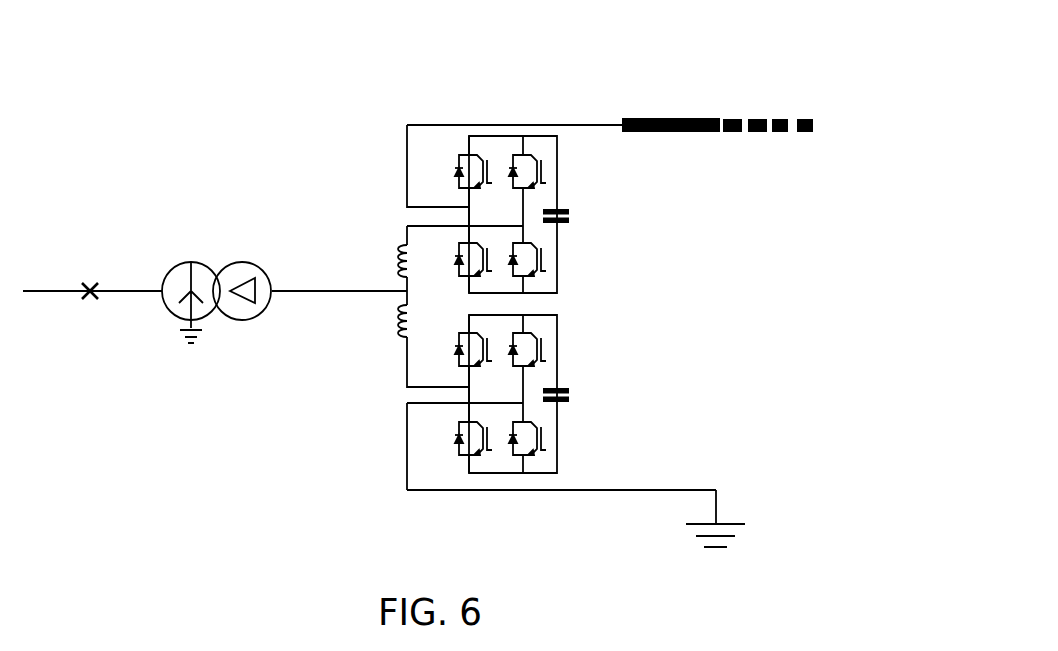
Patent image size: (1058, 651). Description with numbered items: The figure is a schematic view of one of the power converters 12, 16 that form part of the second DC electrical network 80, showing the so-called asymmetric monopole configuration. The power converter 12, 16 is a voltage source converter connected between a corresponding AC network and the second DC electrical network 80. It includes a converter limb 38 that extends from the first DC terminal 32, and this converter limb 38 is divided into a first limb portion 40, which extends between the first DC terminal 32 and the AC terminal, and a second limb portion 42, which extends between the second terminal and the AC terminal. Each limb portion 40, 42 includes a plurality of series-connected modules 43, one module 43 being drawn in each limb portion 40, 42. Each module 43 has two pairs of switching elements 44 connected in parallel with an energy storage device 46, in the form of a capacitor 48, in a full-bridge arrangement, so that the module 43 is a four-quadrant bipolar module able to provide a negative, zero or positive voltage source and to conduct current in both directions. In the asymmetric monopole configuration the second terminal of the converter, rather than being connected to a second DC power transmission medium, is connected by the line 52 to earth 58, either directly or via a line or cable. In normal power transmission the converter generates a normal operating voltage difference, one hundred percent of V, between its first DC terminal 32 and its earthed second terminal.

The first power converter 12 is at (215, 174).
The third power converter 16 is at (212, 48).
The converter limb 38 is at (438, 50).
The first DC terminal 32 is at (407, 125).
The second DC electrical network 80 is at (669, 118).
The first limb portion 40 is at (778, 205).
The second limb portion 42 is at (795, 373).
The module 43 is at (603, 255).
The switching element 44 is at (458, 161).
The energy storage device 46 is at (620, 307).
The capacitor 48 is at (569, 217).
The ground connection line 52 is at (407, 490).
The earth 58 is at (730, 523).